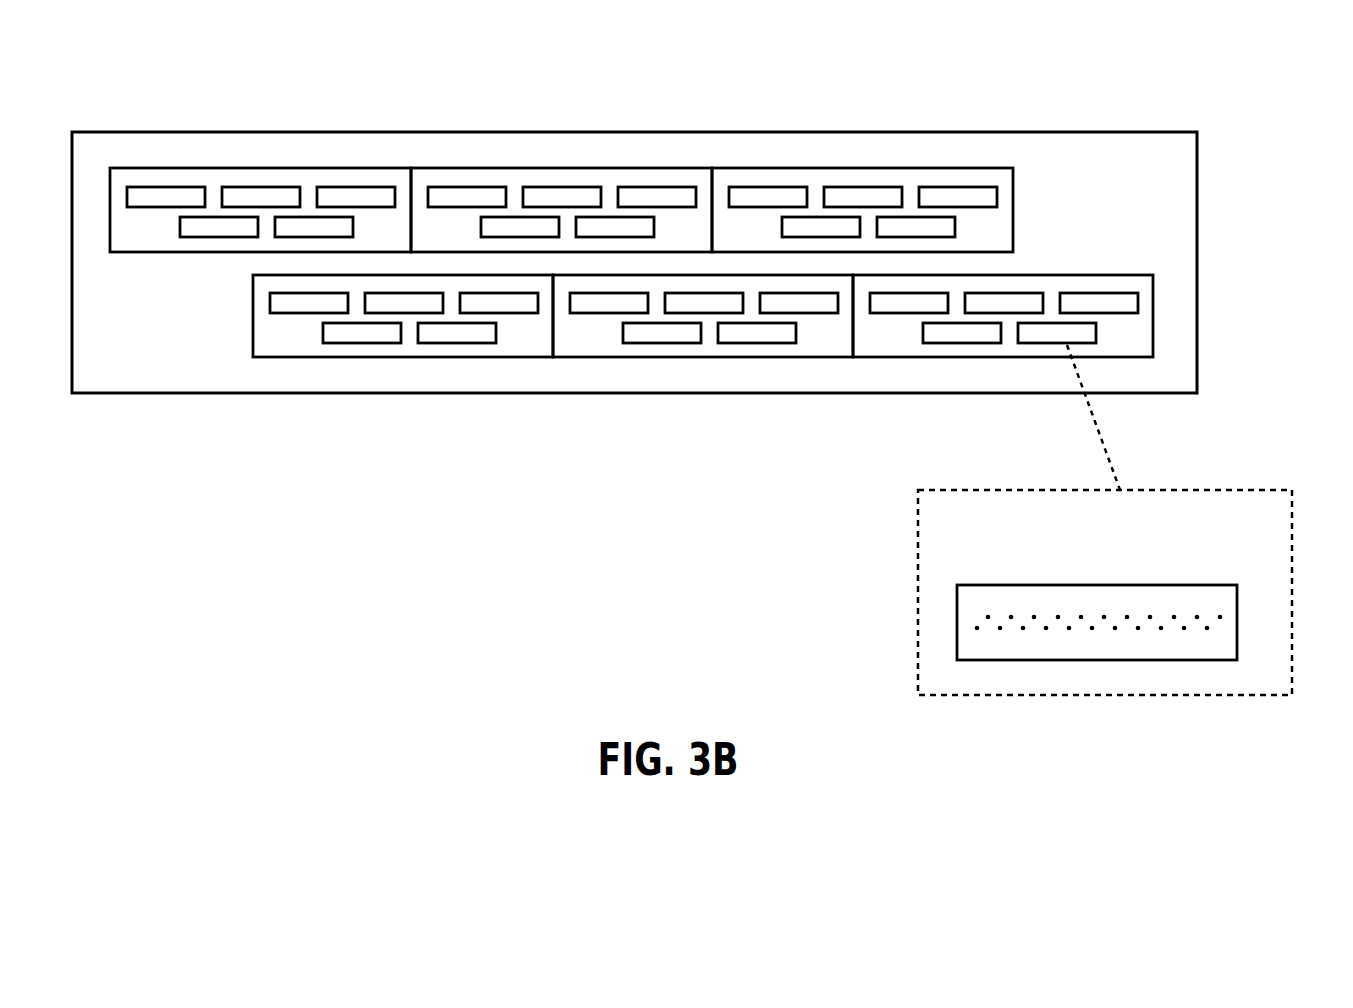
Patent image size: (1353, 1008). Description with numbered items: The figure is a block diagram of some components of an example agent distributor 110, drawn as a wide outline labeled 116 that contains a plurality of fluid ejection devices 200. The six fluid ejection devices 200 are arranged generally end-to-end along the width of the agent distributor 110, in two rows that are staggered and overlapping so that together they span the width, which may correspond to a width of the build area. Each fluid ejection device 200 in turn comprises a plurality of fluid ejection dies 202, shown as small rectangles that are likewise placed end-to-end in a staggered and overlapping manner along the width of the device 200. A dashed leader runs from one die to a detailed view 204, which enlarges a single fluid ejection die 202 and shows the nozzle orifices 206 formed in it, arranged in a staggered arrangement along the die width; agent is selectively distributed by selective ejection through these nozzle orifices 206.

The agent distributor 110 is at (664, 219).
The substrate 116 is at (1137, 166).
The fluid ejection device 200 is at (353, 168).
The fluid ejection die 202 is at (166, 187).
The detailed view 204 is at (1286, 481).
The nozzle orifices 206 is at (987, 633).